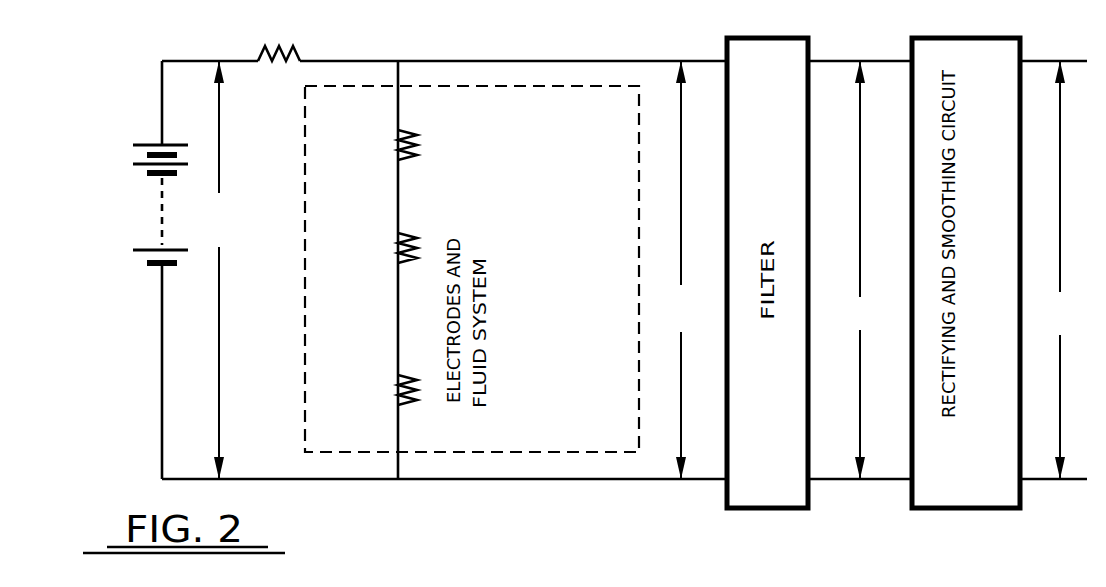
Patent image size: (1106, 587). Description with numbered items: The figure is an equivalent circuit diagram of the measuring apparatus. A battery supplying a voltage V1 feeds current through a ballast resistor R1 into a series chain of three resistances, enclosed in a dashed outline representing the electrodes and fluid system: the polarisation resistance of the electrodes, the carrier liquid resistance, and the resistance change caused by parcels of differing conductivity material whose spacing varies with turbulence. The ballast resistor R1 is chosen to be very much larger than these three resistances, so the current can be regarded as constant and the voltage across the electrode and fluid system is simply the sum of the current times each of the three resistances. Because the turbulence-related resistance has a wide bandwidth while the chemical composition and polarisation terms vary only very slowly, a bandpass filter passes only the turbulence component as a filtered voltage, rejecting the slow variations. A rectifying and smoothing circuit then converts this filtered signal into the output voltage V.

The ballast resistor R1 is at (279, 70).
The battery supply voltage V1 is at (221, 270).
The rectified and smoothed output voltage V is at (1060, 270).